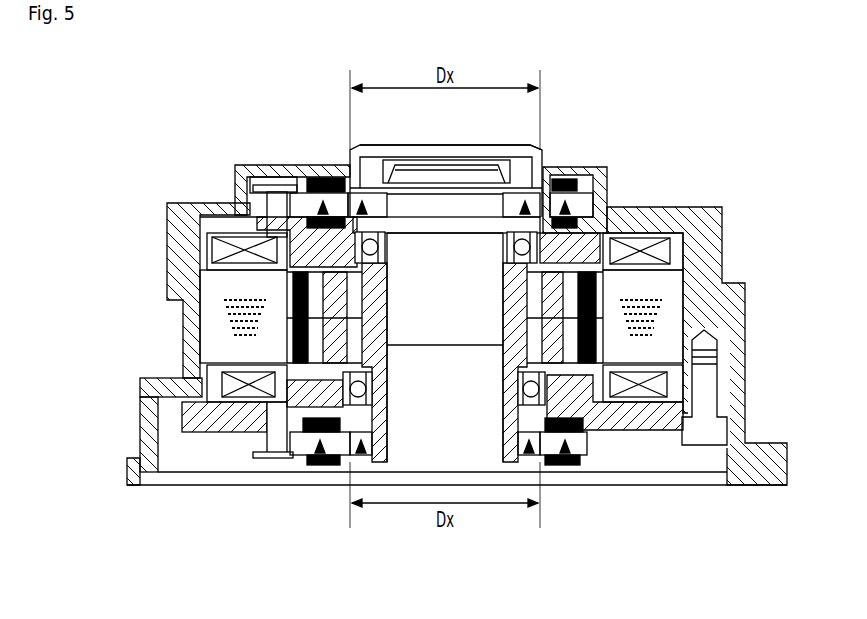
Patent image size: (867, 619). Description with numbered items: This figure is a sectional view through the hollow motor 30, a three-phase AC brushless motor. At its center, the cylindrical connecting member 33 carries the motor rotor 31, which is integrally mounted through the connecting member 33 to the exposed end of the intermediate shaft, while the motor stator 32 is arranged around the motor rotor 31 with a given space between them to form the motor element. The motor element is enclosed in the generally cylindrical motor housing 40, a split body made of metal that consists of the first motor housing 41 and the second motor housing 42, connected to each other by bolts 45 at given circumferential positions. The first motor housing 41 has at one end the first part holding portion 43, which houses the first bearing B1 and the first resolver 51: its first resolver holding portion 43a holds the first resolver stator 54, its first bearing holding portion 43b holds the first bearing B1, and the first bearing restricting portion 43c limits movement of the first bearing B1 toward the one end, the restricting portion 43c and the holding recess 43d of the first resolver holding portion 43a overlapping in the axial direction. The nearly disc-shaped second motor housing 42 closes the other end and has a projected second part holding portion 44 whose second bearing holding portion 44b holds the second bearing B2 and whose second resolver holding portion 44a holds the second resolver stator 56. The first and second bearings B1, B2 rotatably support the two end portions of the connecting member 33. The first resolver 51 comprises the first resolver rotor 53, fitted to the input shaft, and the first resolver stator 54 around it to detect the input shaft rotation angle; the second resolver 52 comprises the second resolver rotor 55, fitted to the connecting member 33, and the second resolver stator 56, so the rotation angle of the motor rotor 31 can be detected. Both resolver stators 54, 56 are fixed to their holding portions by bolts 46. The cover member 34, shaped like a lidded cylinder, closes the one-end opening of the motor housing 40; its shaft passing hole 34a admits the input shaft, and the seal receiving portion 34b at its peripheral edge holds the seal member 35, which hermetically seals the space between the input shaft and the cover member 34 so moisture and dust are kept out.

The hollow motor 30 is at (711, 203).
The motor rotor 31 is at (598, 290).
The motor stator 32 is at (672, 340).
The connecting member 33 is at (525, 328).
The cover member 34 is at (240, 168).
The shaft passing hole 34a is at (358, 187).
The seal receiving portion 34b is at (377, 170).
The seal member 35 is at (514, 150).
The motor housing 40 is at (419, 417).
The first motor housing 41 is at (145, 380).
The second motor housing 42 is at (180, 417).
The first part holding portion 43 is at (614, 151).
The first resolver holding portion 43a is at (608, 170).
The first bearing holding portion 43b is at (593, 188).
The first bearing restricting portion 43c is at (570, 168).
The holding recess 43d is at (546, 178).
The second part holding portion 44 is at (574, 502).
The second resolver holding portion 44a is at (588, 456).
The second bearing holding portion 44b is at (538, 456).
The bolts 45 is at (715, 430).
The bolts 46 is at (262, 186).
The first resolver 51 is at (300, 150).
The second resolver 52 is at (320, 501).
The first resolver rotor 53 is at (350, 176).
The first resolver stator 54 is at (296, 177).
The second resolver rotor 55 is at (353, 456).
The second resolver stator 56 is at (305, 456).
The first bearing B1 is at (349, 241).
The second bearing B2 is at (339, 381).